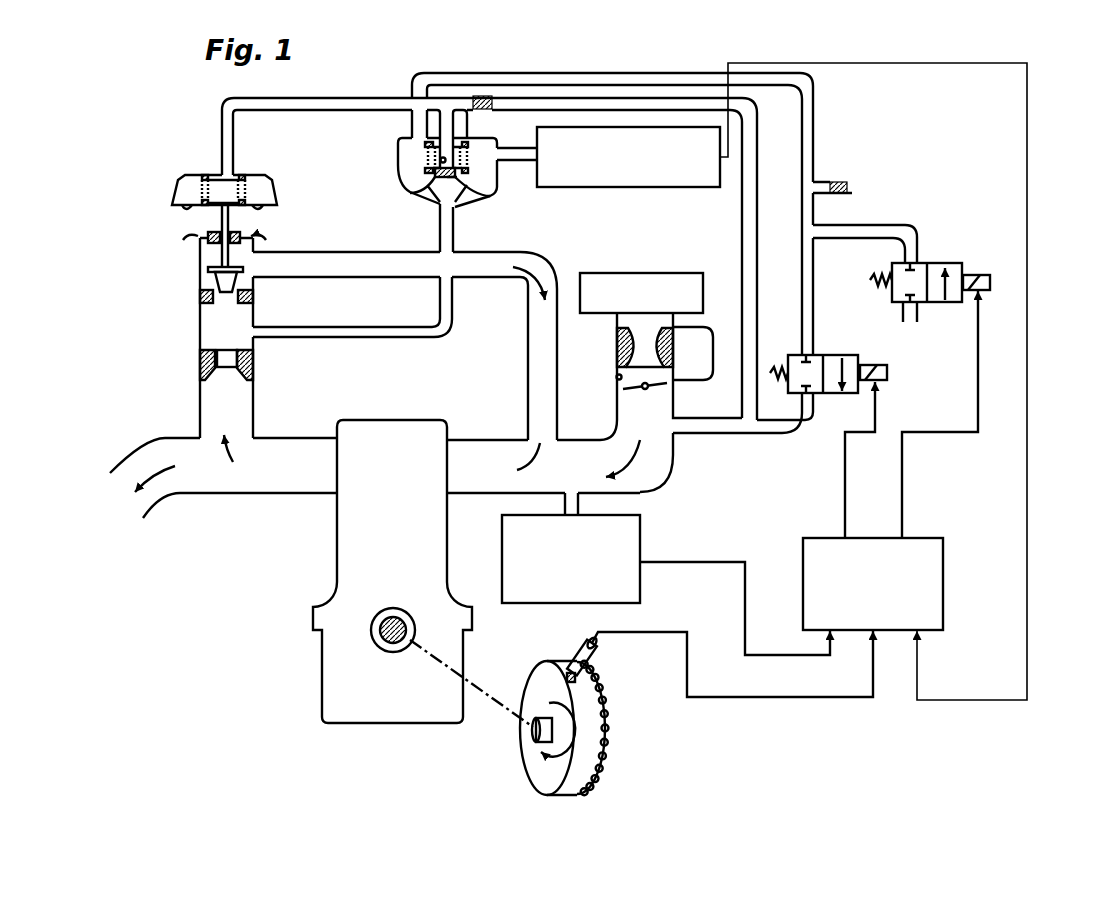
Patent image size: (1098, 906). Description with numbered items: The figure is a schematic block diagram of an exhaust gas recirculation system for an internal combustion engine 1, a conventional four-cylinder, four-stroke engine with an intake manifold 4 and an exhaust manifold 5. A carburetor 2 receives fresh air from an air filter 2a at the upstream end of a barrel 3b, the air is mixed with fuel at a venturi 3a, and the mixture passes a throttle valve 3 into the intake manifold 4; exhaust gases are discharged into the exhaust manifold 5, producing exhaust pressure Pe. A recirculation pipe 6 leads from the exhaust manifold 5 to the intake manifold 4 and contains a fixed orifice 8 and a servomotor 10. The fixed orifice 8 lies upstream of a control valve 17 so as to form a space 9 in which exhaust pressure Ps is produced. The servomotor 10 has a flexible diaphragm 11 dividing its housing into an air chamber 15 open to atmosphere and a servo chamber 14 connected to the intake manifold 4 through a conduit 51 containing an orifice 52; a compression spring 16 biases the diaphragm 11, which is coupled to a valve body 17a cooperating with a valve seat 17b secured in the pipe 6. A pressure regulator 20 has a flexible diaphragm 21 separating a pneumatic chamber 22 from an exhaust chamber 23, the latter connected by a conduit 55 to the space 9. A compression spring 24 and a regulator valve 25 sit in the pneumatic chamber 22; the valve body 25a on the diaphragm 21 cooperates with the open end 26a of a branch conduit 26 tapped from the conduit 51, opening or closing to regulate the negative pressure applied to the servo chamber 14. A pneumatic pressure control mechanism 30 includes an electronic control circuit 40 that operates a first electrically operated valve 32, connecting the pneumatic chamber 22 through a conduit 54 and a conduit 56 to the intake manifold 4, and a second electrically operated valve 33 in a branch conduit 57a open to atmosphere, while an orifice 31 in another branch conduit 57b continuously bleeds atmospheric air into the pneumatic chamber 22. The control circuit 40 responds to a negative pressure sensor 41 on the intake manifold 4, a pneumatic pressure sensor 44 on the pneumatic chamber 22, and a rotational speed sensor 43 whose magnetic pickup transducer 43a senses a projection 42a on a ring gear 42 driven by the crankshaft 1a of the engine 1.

The internal combustion engine 1 is at (423, 573).
The crankshaft 1a is at (388, 641).
The carburetor 2 is at (649, 402).
The air filter 2a is at (650, 304).
The throttle valve 3 is at (652, 390).
The venturi 3a is at (616, 338).
The barrel 3b is at (617, 377).
The intake manifold 4 is at (567, 487).
The exhaust manifold 5 is at (258, 493).
The recirculation pipe 6 is at (355, 277).
The fixed orifice 8 is at (200, 363).
The space 9 is at (200, 320).
The servomotor 10 is at (212, 221).
The flexible diaphragm 11 is at (268, 202).
The servo chamber 14 is at (182, 197).
The air chamber 15 is at (190, 218).
The compression spring 16 is at (243, 180).
The control valve 17 is at (217, 263).
The valve body 17a is at (238, 282).
The valve seat 17b is at (250, 298).
The pressure regulator 20 is at (428, 150).
The flexible diaphragm 21 is at (495, 194).
The pneumatic chamber 22 is at (408, 148).
The exhaust chamber 23 is at (413, 193).
The compression spring 24 is at (466, 142).
The regulator valve 25 is at (434, 180).
The valve body 25a is at (452, 178).
The branch conduit 26 is at (446, 120).
The open end 26a is at (443, 160).
The pneumatic pressure control mechanism 30 is at (1031, 520).
The orifice 31 is at (838, 182).
The first electrically operated valve 32 is at (825, 355).
The second electrically operated valve 33 is at (930, 263).
The electronic control circuit 40 is at (945, 560).
The negative pressure sensor 41 is at (641, 549).
The ring gear 42 is at (672, 713).
The projection 42a is at (569, 672).
The rotational speed sensor 43 is at (615, 713).
The magnetic pickup transducer 43a is at (594, 657).
The pneumatic pressure sensor 44 is at (660, 188).
The conduit 51 is at (300, 104).
The orifice 52 is at (487, 108).
The conduit 54 is at (553, 73).
The conduit 55 is at (340, 337).
The conduit 56 is at (786, 428).
The branch conduit 57a is at (875, 238).
The branch conduit 57b is at (820, 193).